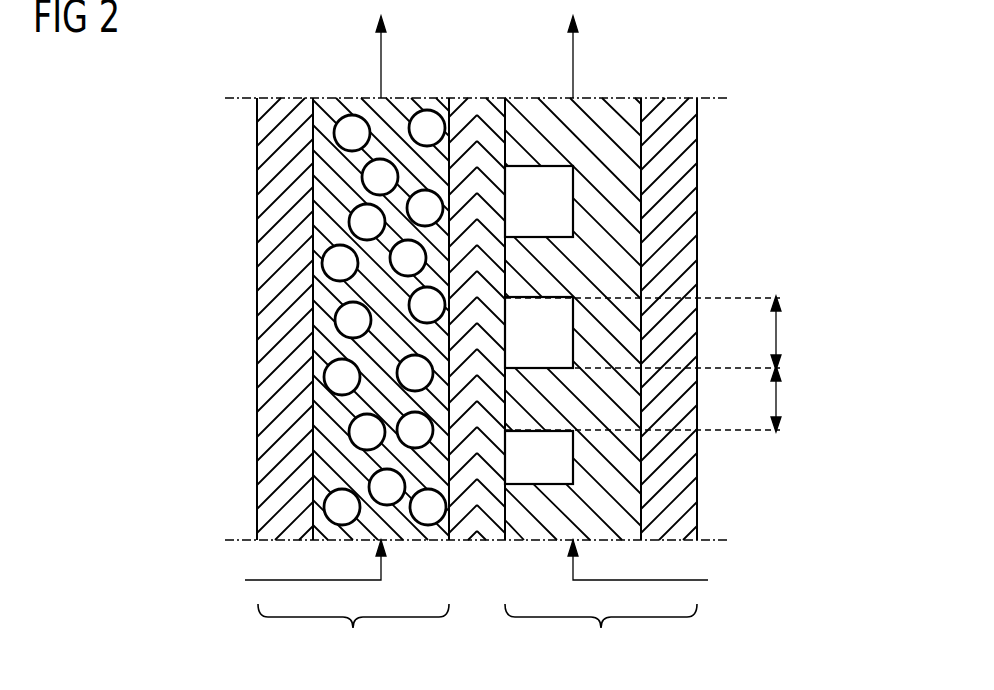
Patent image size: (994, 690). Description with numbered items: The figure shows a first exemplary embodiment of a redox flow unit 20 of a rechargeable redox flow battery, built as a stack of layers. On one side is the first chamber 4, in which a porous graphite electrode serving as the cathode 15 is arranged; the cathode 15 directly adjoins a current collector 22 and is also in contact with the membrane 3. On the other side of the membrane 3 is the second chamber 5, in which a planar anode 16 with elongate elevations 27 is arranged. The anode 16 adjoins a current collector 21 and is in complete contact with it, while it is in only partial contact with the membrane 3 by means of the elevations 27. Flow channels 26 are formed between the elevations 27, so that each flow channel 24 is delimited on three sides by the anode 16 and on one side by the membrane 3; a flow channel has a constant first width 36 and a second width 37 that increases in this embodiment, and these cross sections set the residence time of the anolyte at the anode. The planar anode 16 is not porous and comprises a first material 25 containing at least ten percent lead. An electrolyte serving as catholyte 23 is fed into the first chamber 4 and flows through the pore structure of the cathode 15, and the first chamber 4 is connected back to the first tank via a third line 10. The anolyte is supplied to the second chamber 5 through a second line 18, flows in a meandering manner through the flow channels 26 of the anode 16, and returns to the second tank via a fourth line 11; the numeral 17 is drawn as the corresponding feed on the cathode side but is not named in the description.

The membrane 3 is at (470, 108).
The first chamber 4 is at (353, 634).
The second chamber 5 is at (601, 634).
The third line 10 is at (383, 48).
The fourth line 11 is at (575, 48).
The cathode 15 is at (323, 137).
The anode 16 is at (628, 137).
The inflow 17 is at (248, 580).
The second line 18 is at (708, 578).
The redox flow unit 20 is at (780, 57).
The current collector 21 is at (697, 253).
The current collector 22 is at (257, 253).
The catholyte 23 is at (347, 128).
The flow channel 24 is at (555, 198).
The first material 25 is at (555, 515).
The flow channels 26 is at (520, 467).
The elongate elevations 27 is at (525, 108).
The first width 36 is at (780, 400).
The second width 37 is at (780, 330).